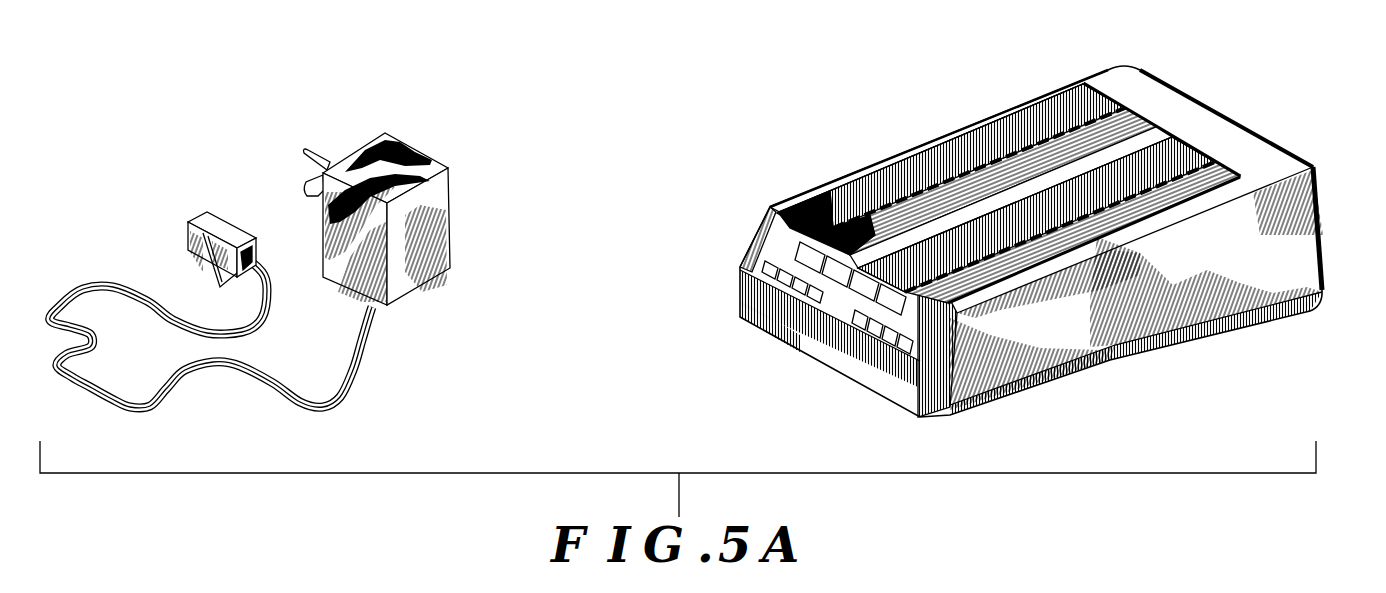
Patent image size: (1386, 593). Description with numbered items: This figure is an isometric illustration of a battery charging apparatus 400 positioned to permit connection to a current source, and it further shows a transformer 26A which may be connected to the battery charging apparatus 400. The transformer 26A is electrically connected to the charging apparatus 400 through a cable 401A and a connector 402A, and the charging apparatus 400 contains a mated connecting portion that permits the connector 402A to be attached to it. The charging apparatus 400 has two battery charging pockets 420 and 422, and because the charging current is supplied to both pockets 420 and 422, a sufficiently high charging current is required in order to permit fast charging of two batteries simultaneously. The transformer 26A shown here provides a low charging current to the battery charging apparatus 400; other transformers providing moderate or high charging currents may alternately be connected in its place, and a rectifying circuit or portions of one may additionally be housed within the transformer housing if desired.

The battery charging apparatus 400 is at (1041, 228).
The pocket 420 is at (868, 172).
The pocket 422 is at (1225, 135).
The transformer 26A is at (405, 143).
The cable 401A is at (127, 397).
The connector 402A is at (222, 225).